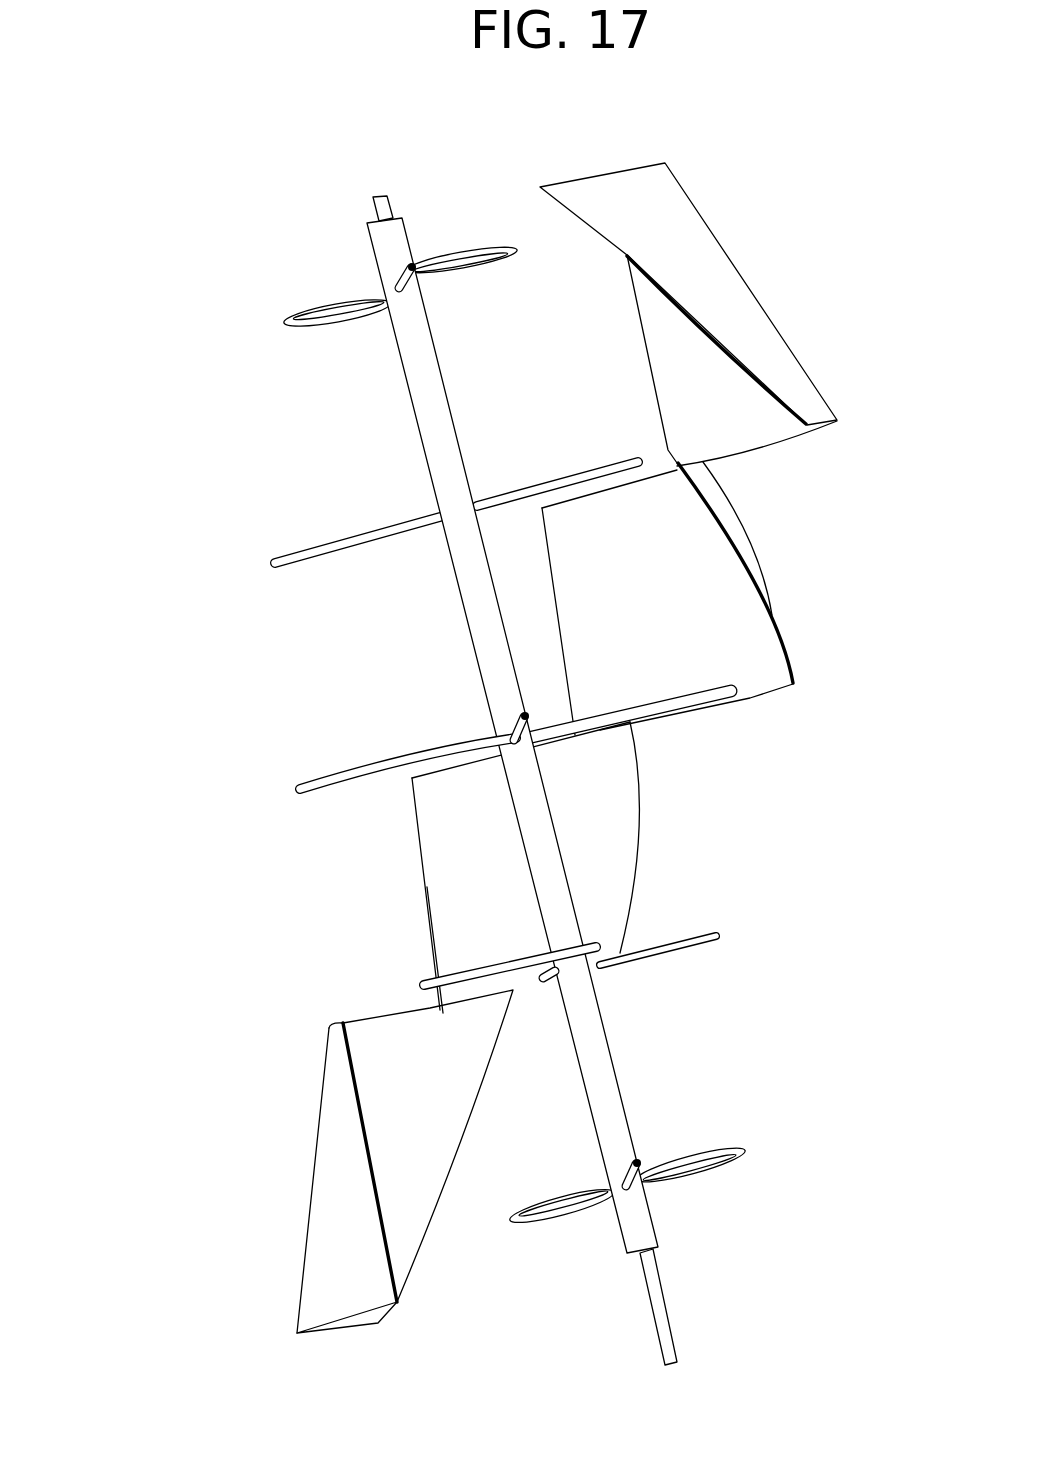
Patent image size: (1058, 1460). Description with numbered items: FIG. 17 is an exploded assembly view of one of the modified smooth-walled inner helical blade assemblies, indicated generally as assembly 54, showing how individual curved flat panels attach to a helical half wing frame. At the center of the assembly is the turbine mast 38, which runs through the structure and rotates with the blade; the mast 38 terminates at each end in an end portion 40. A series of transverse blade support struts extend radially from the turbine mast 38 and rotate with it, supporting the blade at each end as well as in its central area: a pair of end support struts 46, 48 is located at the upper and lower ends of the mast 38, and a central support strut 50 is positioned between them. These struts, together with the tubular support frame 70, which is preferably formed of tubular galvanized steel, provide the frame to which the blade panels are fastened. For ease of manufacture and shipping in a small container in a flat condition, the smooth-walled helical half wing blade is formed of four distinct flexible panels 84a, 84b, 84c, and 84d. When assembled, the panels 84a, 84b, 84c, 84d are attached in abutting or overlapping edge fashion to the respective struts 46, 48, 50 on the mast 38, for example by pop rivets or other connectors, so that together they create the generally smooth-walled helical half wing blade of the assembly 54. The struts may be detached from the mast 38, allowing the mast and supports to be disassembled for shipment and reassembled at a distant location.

The turbine mast 38 is at (408, 387).
The shaft end pin 40 is at (372, 209).
The end support strut 46 is at (405, 272).
The end support strut 48 is at (625, 1172).
The central support strut 50 is at (520, 717).
The rotor assembly 54 is at (163, 338).
The tubular support frame 70 is at (257, 553).
The flexible panel 84a is at (765, 323).
The flexible panel 84b is at (748, 543).
The flexible panel 84c is at (427, 887).
The flexible panel 84d is at (320, 1207).